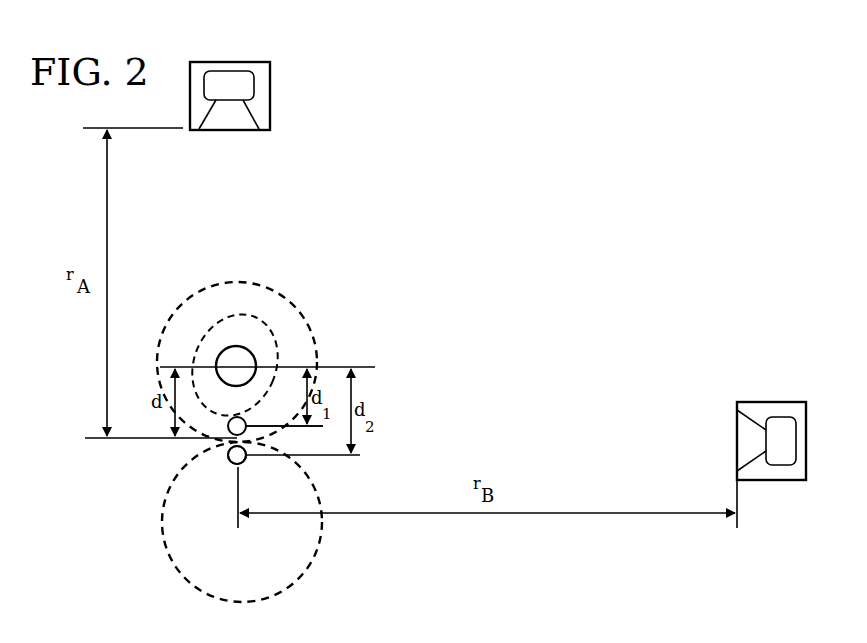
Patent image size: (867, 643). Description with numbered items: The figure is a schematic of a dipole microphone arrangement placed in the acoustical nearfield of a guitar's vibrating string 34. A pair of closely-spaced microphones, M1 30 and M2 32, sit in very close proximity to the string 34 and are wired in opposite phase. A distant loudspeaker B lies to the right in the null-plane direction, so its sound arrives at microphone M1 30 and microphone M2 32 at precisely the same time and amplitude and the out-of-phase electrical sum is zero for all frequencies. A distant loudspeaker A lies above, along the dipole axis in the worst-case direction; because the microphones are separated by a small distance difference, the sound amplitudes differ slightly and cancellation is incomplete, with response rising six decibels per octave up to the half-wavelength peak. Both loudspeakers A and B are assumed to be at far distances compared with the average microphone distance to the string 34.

The microphone M1 30 is at (233, 440).
The microphone M2 32 is at (241, 456).
The vibrating string 34 is at (240, 358).
The loudspeaker A is at (236, 79).
The loudspeaker B is at (778, 426).
The microphone M1 is at (225, 428).
The microphone M2 is at (229, 458).